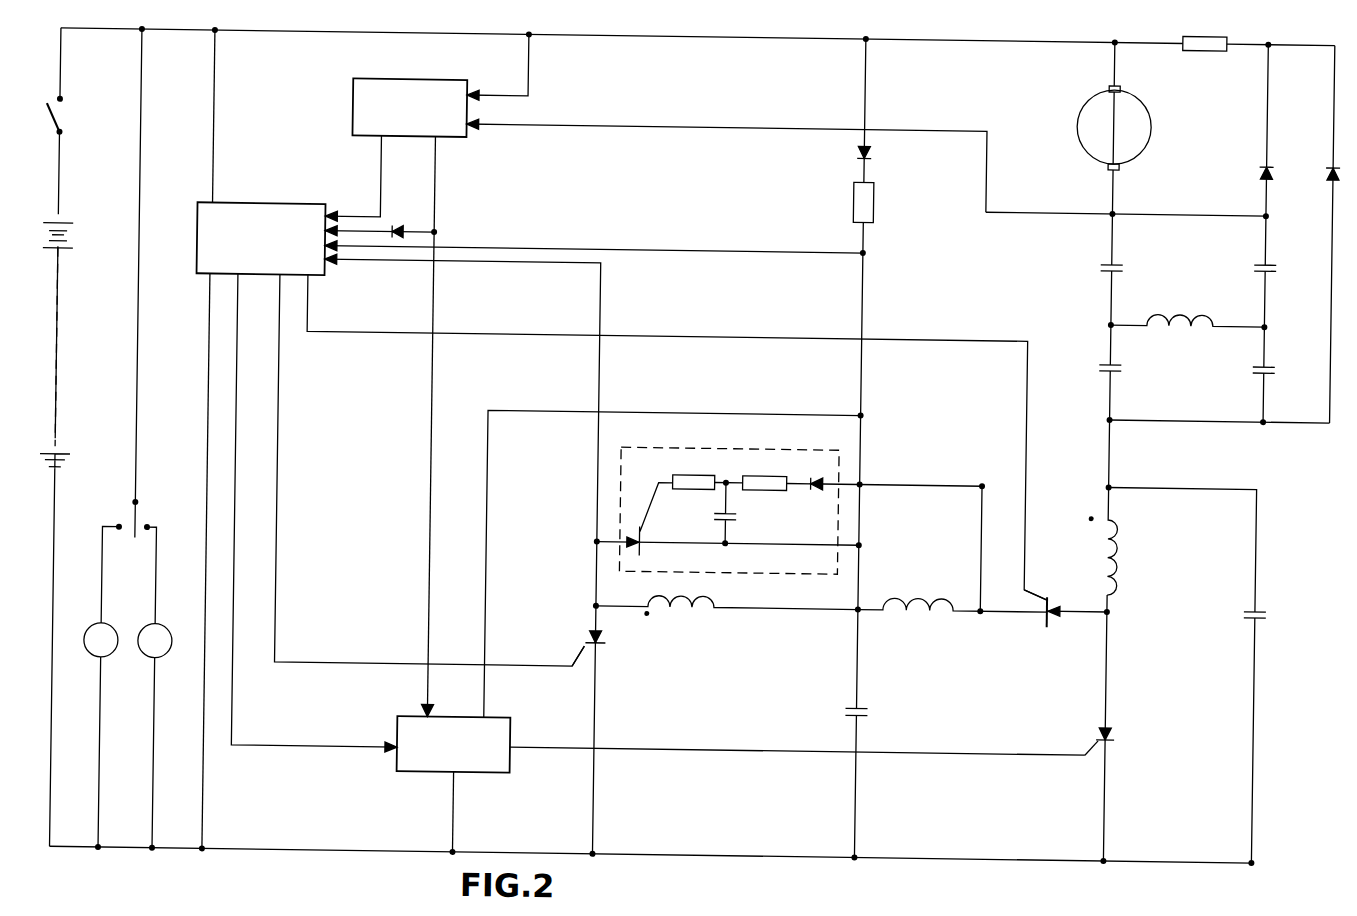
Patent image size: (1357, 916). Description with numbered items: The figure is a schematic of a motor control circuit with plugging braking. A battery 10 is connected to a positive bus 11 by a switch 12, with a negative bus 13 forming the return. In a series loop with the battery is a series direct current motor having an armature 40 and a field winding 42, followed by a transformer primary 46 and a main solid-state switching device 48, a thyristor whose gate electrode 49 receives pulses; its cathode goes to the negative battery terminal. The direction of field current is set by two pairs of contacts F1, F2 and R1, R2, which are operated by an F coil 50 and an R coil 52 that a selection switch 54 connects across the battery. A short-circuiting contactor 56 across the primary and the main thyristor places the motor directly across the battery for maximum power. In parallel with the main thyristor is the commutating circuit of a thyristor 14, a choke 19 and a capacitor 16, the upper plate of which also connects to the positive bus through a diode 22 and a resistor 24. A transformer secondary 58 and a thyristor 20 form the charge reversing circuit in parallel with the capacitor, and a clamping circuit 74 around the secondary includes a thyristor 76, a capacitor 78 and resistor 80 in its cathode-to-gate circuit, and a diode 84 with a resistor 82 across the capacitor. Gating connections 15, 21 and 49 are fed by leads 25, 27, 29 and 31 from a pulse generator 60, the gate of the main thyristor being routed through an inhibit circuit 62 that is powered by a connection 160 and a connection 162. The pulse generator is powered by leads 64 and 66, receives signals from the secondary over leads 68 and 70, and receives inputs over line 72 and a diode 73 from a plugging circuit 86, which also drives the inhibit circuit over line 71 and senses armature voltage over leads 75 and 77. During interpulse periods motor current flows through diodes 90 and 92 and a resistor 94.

The battery 10 is at (79, 246).
The positive bus 11 is at (192, 24).
The switch 12 is at (65, 121).
The negative bus 13 is at (300, 853).
The thyristor 14 is at (1056, 612).
The gating connection 15 is at (1036, 584).
The capacitor 16 is at (836, 696).
The choke 19 is at (912, 593).
The thyristor 20 is at (590, 632).
The gating connection 21 is at (574, 658).
The diode 22 is at (850, 152).
The resistor 24 is at (848, 201).
The lead 25 is at (308, 340).
The lead 27 is at (278, 459).
The lead 29 is at (236, 404).
The lead 31 is at (642, 748).
The armature 40 is at (1076, 100).
The field winding 42 is at (1182, 314).
The transformer primary 46 is at (1132, 546).
The solid-state switching device 48 is at (1118, 728).
The gate electrode 49 is at (1084, 744).
The F coil 50 is at (113, 626).
The R coil 52 is at (167, 626).
The selection switch 54 is at (138, 518).
The short-circuiting contactor 56 is at (1278, 612).
The transformer secondary 58 is at (684, 619).
The pulse generator 60 is at (250, 210).
The inhibit circuit 62 is at (407, 718).
The lead 64 is at (212, 110).
The lead 66 is at (207, 350).
The lead 68 is at (580, 288).
The lead 70 is at (674, 249).
The line 71 is at (432, 179).
The input line 72 is at (378, 175).
The diode 73 is at (394, 230).
The clamping circuit 74 is at (850, 433).
The lead 75 is at (686, 126).
The thyristor 76 is at (648, 551).
The lead 77 is at (518, 78).
The capacitor 78 is at (740, 516).
The resistor 80 is at (698, 479).
The resistor 82 is at (768, 479).
The diode 84 is at (814, 494).
The plugging circuit 86 is at (416, 83).
The diode 90 is at (1256, 160).
The diode 92 is at (1322, 160).
The resistor 94 is at (1200, 44).
The connection 160 is at (488, 412).
The connection 162 is at (458, 821).
The forward contact F1 is at (1124, 261).
The forward contact F2 is at (1279, 364).
The reverse contact R1 is at (1278, 262).
The reverse contact R2 is at (1128, 365).